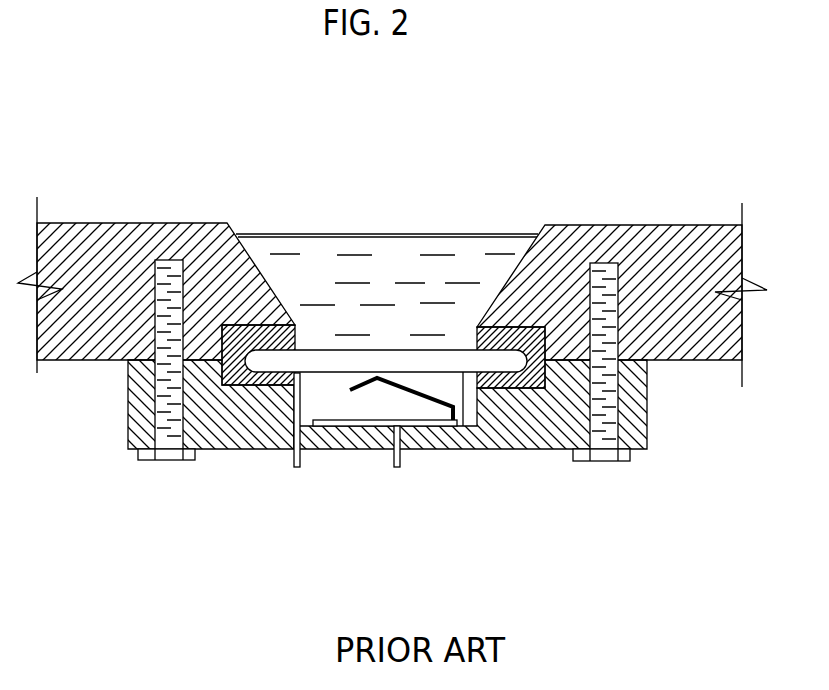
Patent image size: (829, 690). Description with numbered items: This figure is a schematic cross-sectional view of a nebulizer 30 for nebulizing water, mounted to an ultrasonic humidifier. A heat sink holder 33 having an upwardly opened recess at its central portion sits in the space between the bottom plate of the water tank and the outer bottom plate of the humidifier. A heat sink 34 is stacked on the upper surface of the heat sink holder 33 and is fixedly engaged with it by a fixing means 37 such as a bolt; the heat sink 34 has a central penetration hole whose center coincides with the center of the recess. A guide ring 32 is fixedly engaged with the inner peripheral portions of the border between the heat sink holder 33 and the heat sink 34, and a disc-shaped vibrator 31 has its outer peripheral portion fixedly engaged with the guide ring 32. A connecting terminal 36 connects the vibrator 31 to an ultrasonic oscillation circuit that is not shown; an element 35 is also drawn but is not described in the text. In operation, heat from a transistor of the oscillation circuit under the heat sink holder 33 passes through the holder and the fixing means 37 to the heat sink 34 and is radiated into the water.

The nebulizer 30 is at (392, 325).
The vibrator 31 is at (455, 362).
The guide ring 32 is at (533, 413).
The heat sink holder 33 is at (648, 418).
The heat sink 34 is at (608, 226).
The lead pin 35 is at (297, 468).
The connecting terminal 36 is at (397, 468).
The fixing means 37 is at (608, 462).